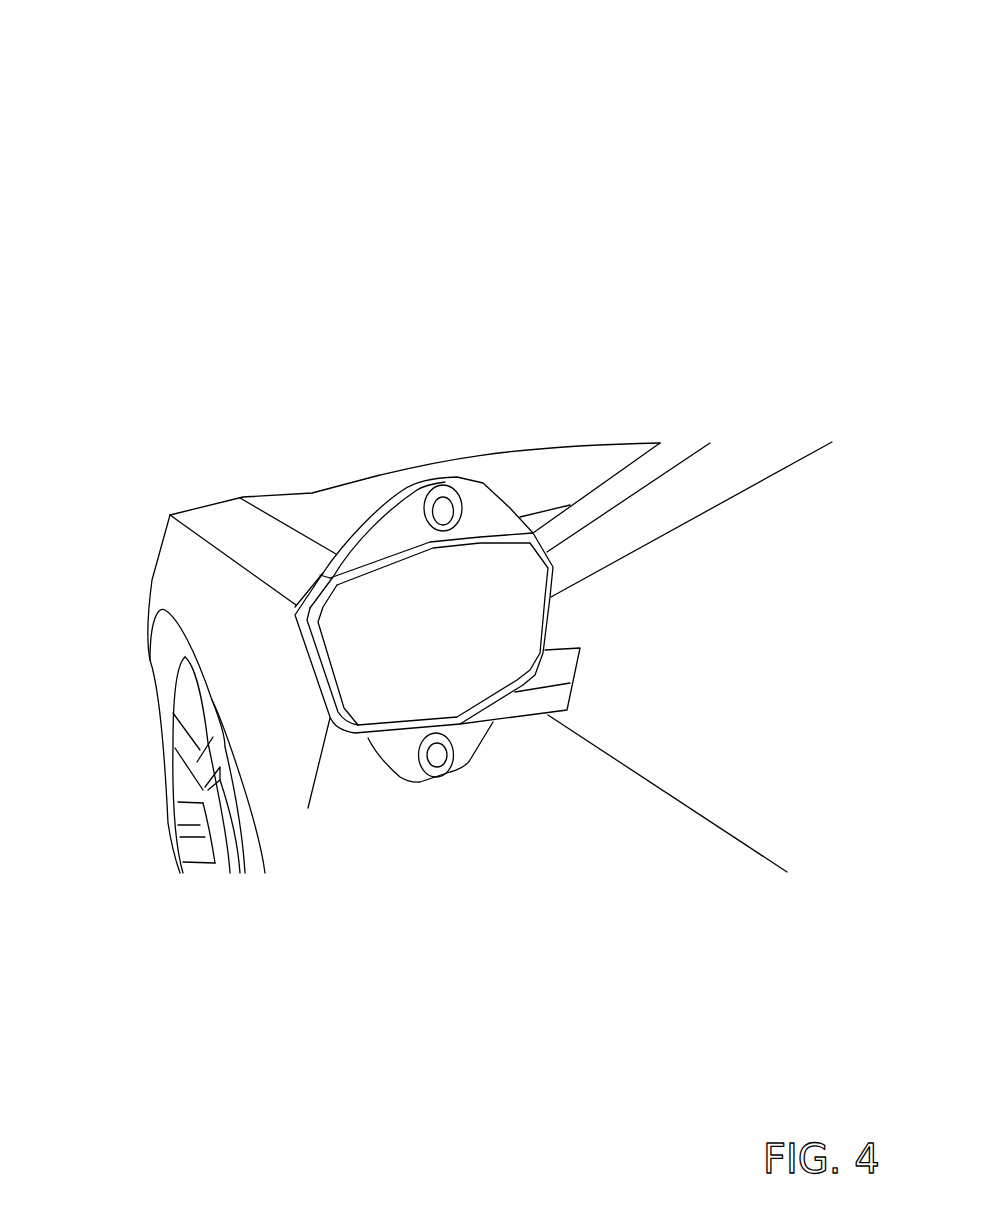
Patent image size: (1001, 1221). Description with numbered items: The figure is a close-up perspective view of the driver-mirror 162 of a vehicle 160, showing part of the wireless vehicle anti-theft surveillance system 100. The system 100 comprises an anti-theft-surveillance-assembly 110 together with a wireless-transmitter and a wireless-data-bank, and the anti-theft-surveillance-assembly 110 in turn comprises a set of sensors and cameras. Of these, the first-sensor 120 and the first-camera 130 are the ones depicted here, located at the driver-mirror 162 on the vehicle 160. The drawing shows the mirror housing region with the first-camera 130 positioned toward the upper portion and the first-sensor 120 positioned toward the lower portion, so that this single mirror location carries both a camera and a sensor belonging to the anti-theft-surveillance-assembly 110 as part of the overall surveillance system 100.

The wireless vehicle anti-theft surveillance system 100 is at (490, 451).
The anti-theft-surveillance-assembly 110 is at (477, 593).
The first-sensor 120 is at (445, 774).
The first-camera 130 is at (426, 508).
The vehicle 160 is at (262, 661).
The driver-mirror 162 is at (511, 610).